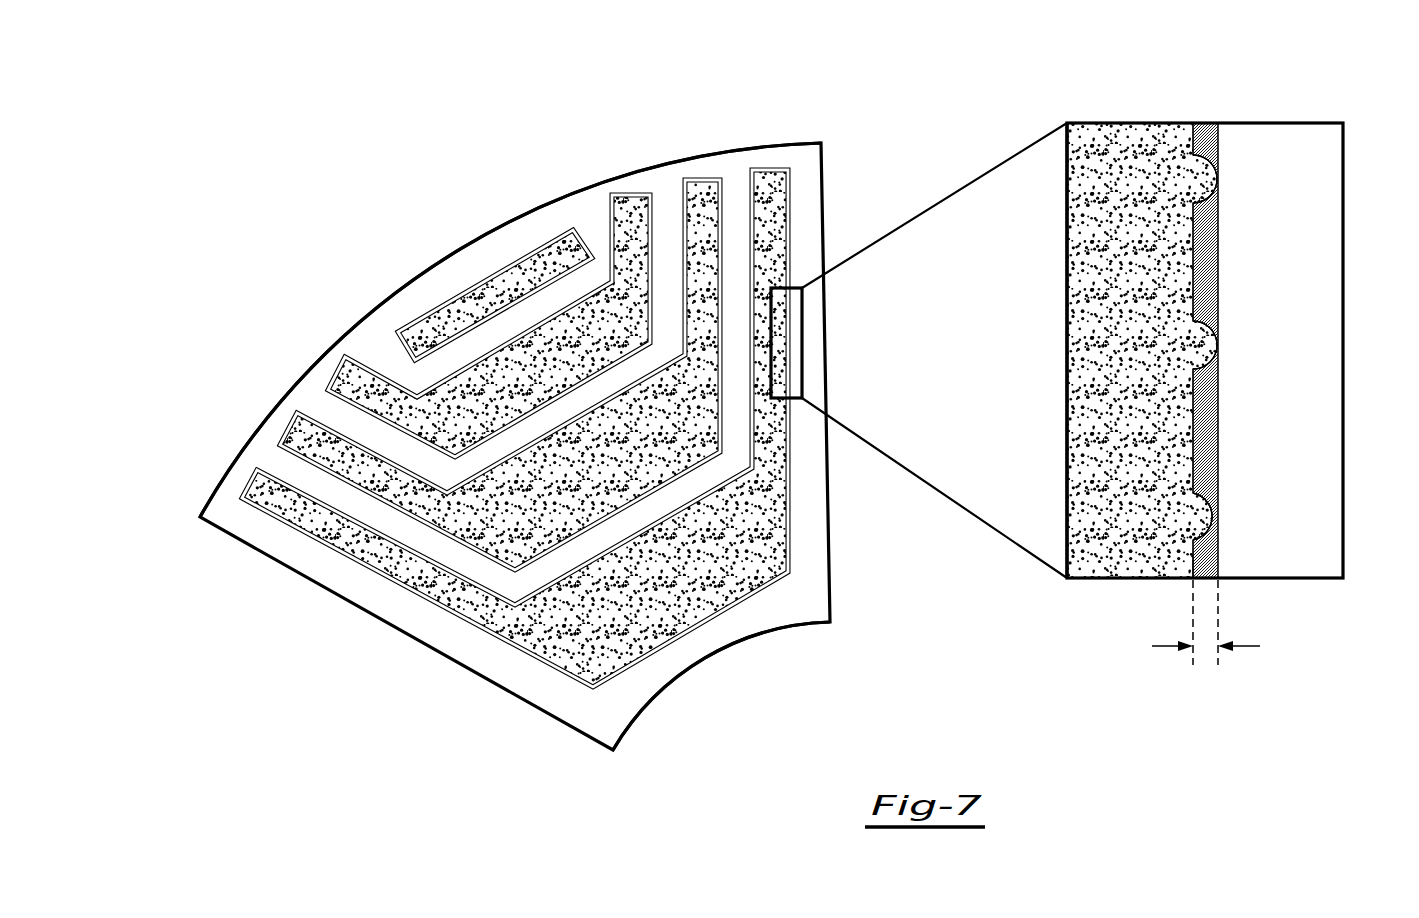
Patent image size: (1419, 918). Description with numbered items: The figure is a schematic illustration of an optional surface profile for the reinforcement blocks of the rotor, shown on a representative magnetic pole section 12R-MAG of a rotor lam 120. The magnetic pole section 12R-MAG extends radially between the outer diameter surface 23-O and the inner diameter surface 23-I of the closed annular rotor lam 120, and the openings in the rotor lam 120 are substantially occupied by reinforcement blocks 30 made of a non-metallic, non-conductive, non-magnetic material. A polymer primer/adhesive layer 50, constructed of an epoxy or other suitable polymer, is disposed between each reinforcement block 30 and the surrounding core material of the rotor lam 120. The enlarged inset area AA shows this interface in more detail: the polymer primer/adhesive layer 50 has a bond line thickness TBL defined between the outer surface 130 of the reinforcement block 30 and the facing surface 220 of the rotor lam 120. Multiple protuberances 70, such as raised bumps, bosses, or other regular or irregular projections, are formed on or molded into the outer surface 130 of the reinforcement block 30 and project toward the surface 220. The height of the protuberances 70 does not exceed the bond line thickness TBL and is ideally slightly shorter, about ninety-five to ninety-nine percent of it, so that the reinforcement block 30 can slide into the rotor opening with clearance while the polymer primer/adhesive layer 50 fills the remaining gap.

The magnetic pole section 12R-MAG is at (268, 234).
The outer diameter surface 23-O is at (458, 243).
The inner diameter surface 23-I is at (712, 652).
The reinforcement block 30 is at (450, 317).
The polymer primer/adhesive layer 50 is at (540, 250).
The protuberances 70 is at (1205, 177).
The rotor lam 120 is at (1300, 351).
The surface of rotor lam 220 is at (1208, 427).
The outer surface of reinforcement block 130 is at (1196, 558).
The bond line thickness TBL is at (1206, 644).
The inset area AA is at (793, 288).